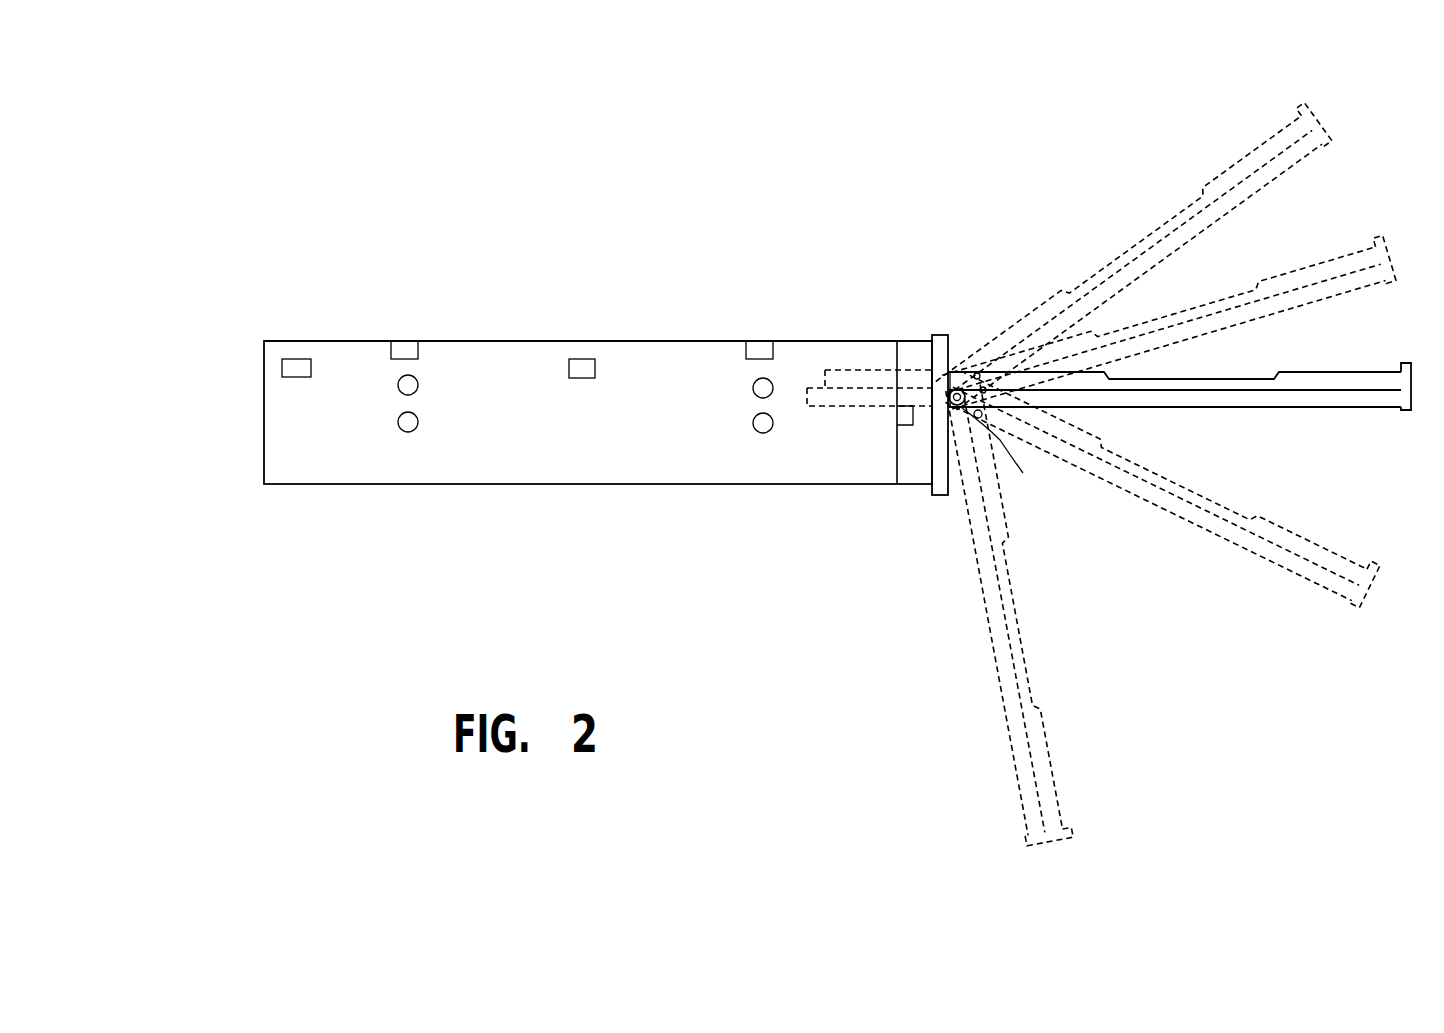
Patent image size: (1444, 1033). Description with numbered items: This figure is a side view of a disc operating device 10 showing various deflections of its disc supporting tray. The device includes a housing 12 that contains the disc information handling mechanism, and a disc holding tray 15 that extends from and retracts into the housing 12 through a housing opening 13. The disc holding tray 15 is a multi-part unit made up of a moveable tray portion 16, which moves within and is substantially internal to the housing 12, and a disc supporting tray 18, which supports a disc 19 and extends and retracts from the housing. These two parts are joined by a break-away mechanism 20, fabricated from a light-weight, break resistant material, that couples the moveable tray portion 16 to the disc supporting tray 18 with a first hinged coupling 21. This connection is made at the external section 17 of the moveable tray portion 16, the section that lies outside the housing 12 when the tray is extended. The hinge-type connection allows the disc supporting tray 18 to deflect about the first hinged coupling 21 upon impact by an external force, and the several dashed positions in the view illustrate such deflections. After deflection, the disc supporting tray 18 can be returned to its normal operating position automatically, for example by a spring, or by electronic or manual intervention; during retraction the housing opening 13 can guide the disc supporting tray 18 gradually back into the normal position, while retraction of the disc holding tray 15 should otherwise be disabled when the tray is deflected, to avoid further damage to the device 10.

The disc operating device 10 is at (647, 293).
The housing 12 is at (497, 341).
The housing opening 13 is at (958, 363).
The disc holding tray 15 is at (1346, 425).
The moveable tray portion 16 is at (848, 397).
The external section 17 is at (962, 366).
The disc supporting tray 18 is at (1341, 372).
The disc 19 is at (1200, 375).
The break-away mechanism 20 is at (985, 316).
The first hinged coupling 21 is at (1012, 456).